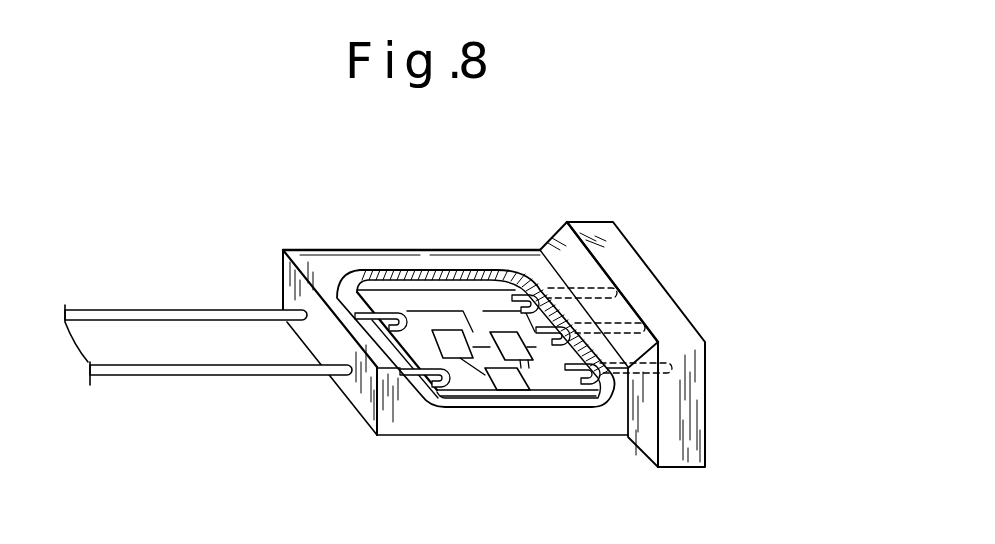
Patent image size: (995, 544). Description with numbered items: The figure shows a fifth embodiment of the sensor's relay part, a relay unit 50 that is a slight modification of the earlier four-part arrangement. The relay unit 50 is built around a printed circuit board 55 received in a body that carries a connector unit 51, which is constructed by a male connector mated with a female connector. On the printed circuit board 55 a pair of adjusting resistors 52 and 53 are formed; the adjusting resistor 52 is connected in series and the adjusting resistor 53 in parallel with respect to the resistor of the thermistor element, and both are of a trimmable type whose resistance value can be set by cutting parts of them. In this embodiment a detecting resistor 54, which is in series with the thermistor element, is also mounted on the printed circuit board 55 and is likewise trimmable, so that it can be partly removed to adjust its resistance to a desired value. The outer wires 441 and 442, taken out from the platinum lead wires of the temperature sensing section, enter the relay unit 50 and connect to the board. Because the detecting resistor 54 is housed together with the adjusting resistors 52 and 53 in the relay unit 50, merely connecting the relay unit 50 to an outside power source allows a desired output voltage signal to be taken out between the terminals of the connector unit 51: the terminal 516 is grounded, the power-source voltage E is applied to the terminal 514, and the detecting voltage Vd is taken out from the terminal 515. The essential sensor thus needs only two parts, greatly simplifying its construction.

The relay unit 50 is at (506, 170).
The connector unit 51 is at (598, 232).
The adjusting resistor 52 is at (500, 378).
The adjusting resistor 53 is at (452, 340).
The detecting resistor 54 is at (520, 352).
The printed circuit board 55 is at (382, 297).
The outer wire 441 is at (153, 310).
The outer wire 442 is at (218, 376).
The terminal 514 is at (677, 366).
The terminal 515 is at (615, 291).
The terminal 516 is at (643, 328).